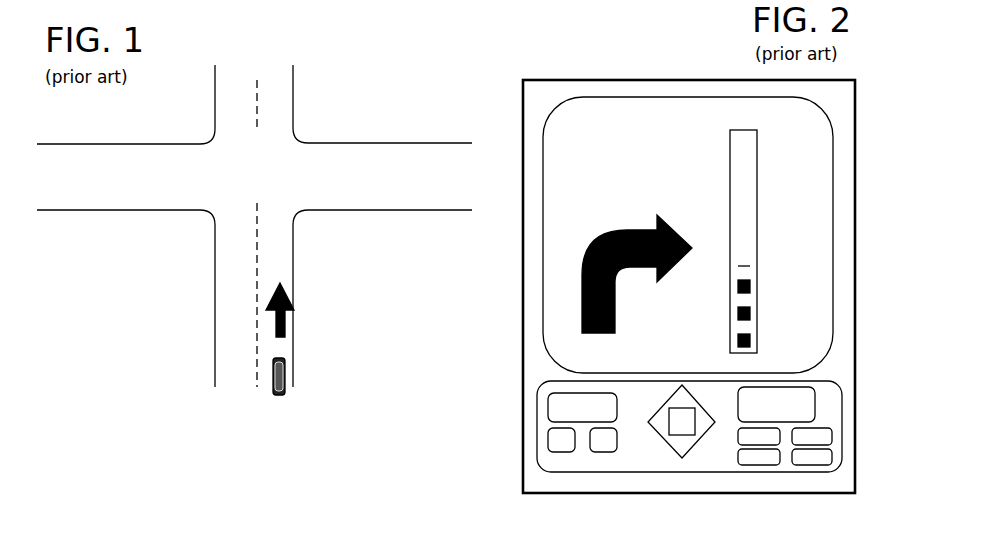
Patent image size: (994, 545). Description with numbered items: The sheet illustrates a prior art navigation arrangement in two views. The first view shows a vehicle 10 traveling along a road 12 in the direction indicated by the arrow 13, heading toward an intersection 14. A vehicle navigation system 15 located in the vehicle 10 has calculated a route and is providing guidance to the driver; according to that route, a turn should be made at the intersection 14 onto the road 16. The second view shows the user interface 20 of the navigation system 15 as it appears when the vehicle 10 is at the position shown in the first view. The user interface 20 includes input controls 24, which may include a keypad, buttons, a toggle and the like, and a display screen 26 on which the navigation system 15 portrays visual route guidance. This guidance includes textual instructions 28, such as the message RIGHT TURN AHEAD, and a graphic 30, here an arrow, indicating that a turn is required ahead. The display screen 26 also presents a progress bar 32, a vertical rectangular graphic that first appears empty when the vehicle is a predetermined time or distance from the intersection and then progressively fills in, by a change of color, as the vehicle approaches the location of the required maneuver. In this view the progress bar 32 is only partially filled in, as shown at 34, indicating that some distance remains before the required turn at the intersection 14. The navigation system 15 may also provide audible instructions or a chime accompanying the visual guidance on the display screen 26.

In FIG. 1, the vehicle 10 is at (272, 389).
In FIG. 1, the road 12 is at (214, 284).
In FIG. 1, the arrow 13 is at (286, 324).
In FIG. 1, the intersection 14 is at (273, 157).
In FIG. 1, the vehicle navigation system 15 is at (290, 394).
In FIG. 2, the vehicle navigation system 15 is at (604, 52).
In FIG. 1, the road 16 is at (371, 139).
In FIG. 2, the user interface 20 is at (567, 77).
In FIG. 2, the input controls 24 is at (547, 381).
In FIG. 2, the display screen 26 is at (547, 117).
In FIG. 2, the textual instructions 28 is at (619, 119).
In FIG. 2, the graphic 30 is at (576, 284).
In FIG. 2, the progress bar 32 is at (742, 126).
In FIG. 2, the partially filled-in portion of progress bar 34 is at (752, 305).